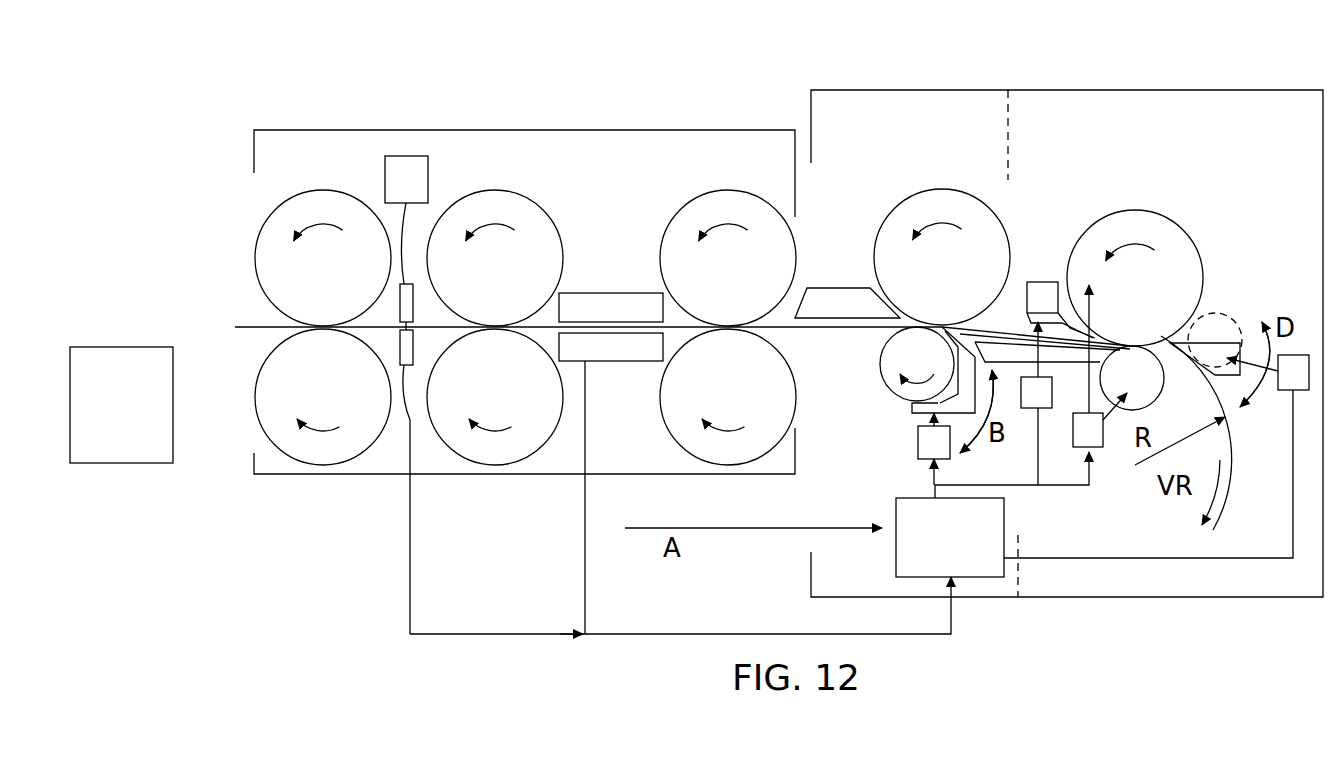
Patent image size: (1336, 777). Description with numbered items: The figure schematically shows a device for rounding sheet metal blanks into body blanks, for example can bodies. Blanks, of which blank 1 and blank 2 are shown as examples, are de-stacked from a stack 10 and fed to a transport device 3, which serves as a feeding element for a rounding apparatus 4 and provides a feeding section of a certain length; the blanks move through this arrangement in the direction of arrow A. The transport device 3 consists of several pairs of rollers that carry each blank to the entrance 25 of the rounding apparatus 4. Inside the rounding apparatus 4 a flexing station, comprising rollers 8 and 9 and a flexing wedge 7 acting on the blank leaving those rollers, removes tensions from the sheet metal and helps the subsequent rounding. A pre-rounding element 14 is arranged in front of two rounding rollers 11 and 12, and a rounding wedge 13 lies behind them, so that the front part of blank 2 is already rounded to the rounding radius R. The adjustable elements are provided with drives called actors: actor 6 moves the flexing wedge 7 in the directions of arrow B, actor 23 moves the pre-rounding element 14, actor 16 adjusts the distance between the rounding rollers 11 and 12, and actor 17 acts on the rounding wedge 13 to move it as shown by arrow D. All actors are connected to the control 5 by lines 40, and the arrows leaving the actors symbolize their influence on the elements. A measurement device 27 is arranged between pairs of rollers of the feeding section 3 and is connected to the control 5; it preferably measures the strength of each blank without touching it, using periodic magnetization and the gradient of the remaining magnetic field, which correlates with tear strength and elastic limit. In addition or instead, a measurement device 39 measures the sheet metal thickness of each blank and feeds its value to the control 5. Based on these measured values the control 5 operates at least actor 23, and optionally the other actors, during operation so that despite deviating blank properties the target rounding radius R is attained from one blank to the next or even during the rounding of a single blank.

The blank 1 is at (262, 330).
The blank 2 is at (1243, 465).
The transport device 3 is at (470, 128).
The rounding apparatus 4 is at (1115, 89).
The control 5 is at (940, 545).
The actor 6 is at (918, 440).
The flexing wedge 7 is at (975, 397).
The roller 8 is at (908, 366).
The roller 9 is at (923, 277).
The stack 10 is at (118, 443).
The rounding roller 11 is at (1140, 298).
The rounding roller 12 is at (1143, 385).
The rounding wedge 13 is at (1215, 330).
The pre-rounding element 14 is at (1040, 297).
The actor 16 is at (1097, 447).
The actor 17 is at (1283, 392).
The actor 23 is at (1045, 409).
The entrance 25 is at (826, 305).
The measurement device 27 is at (604, 291).
The measurement device 39 is at (428, 173).
The lines 40 is at (1015, 485).